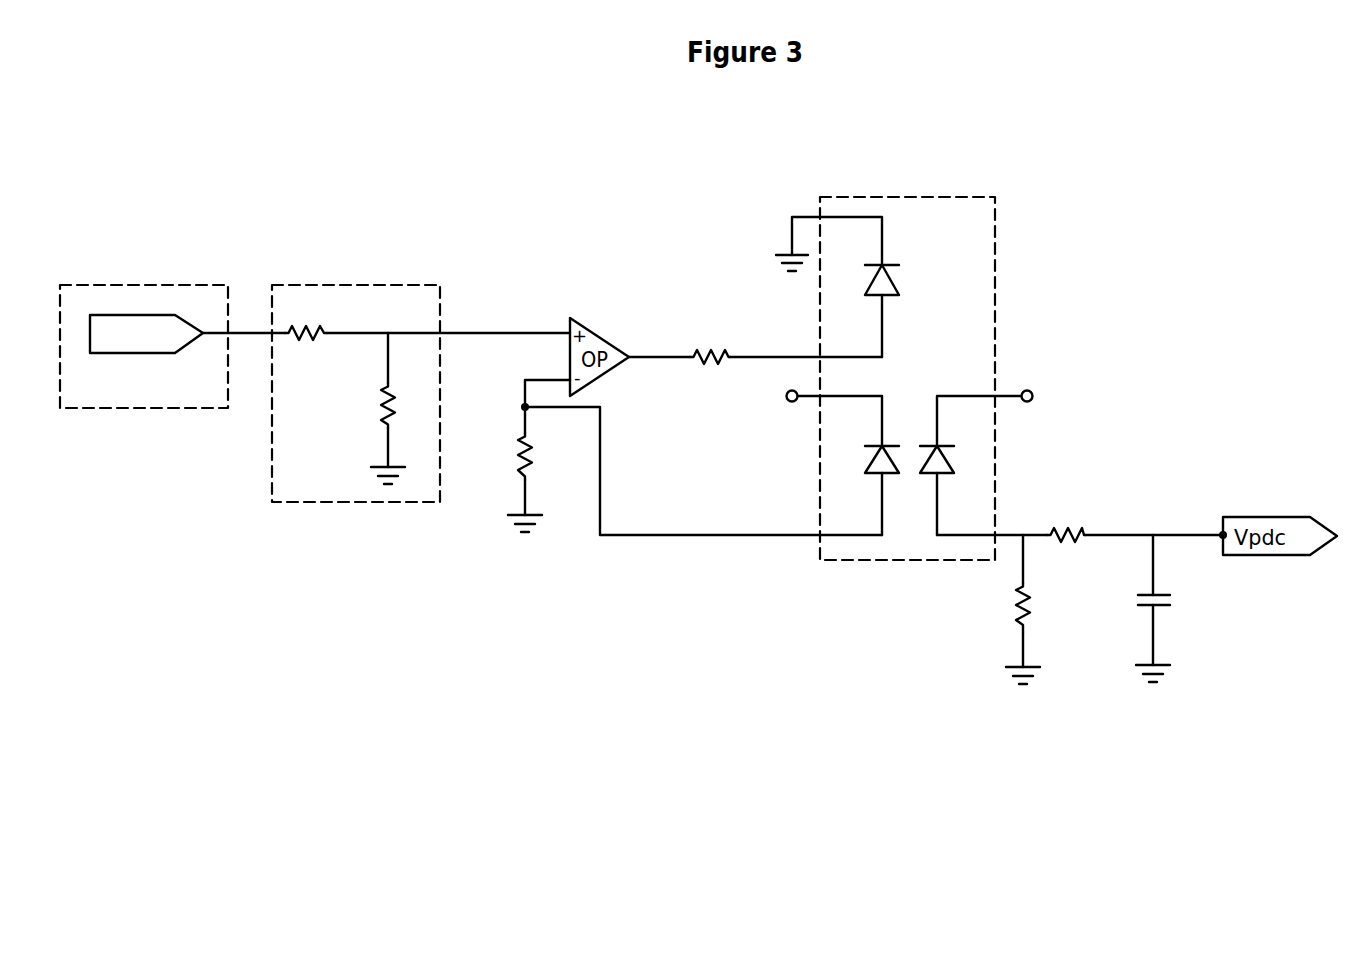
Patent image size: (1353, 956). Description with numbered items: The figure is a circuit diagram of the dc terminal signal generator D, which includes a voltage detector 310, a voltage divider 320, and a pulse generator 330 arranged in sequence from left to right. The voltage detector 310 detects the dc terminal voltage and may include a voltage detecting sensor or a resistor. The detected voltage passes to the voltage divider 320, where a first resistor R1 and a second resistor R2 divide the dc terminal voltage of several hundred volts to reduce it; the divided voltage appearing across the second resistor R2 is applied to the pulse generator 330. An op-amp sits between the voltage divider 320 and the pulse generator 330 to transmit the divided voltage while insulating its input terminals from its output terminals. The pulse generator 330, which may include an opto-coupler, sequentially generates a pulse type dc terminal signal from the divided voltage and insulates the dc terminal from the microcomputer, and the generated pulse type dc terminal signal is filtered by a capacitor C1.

The voltage detector 310 is at (180, 285).
The voltage divider 320 is at (356, 393).
The pulse generator 330 is at (950, 197).
The dc terminal signal generator D is at (284, 142).
The first resistor R1 is at (306, 320).
The second resistor R2 is at (377, 408).
The capacitor C1 is at (1168, 608).